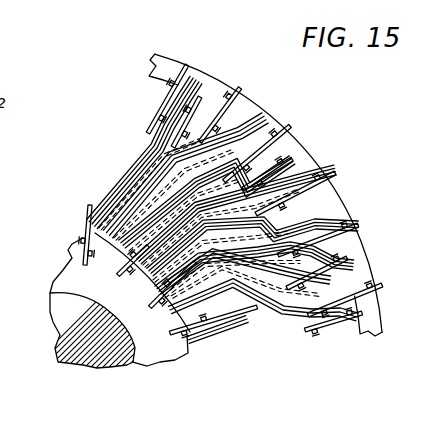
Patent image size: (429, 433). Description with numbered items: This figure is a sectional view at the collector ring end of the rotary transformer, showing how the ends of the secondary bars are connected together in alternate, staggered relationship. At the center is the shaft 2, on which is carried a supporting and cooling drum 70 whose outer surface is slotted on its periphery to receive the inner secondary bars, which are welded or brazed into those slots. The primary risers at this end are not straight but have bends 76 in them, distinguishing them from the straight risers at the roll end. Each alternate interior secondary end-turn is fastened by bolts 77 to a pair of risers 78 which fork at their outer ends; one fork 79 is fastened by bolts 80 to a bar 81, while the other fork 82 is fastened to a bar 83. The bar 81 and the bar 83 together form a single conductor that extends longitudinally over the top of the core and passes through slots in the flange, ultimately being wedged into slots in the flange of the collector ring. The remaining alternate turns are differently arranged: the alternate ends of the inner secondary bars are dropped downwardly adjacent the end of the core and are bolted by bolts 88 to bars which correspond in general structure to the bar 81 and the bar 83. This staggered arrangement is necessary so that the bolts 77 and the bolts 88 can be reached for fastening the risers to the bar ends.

The shaft 2 is at (110, 368).
The supporting and cooling drum 70 is at (165, 360).
The bends 76 is at (272, 288).
The bolts 77 is at (119, 208).
The risers 78 is at (148, 150).
The fork 79 is at (250, 111).
The bolts 80 is at (257, 130).
The bar 81 is at (249, 117).
The fork 82 is at (248, 87).
The bar 83 is at (238, 83).
The bolts 88 is at (73, 250).